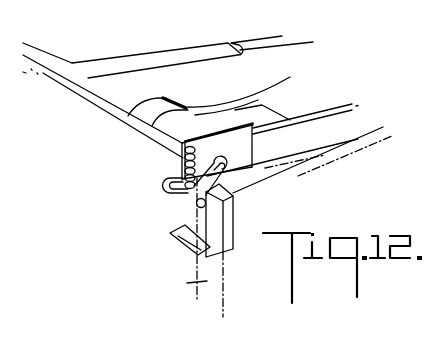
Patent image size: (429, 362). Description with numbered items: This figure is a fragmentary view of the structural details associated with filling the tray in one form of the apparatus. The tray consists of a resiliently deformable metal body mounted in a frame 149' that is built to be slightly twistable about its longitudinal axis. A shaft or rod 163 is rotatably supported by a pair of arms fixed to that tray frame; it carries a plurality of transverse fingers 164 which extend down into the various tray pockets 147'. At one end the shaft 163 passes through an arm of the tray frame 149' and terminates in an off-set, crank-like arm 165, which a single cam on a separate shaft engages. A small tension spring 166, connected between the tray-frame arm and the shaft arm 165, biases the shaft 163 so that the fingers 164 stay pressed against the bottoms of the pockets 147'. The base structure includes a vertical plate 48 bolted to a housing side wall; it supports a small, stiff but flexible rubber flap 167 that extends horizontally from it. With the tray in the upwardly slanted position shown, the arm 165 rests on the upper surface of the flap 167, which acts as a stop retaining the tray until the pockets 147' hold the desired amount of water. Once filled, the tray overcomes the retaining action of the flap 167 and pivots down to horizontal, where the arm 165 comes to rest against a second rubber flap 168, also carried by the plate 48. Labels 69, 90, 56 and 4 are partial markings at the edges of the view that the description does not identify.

The tray pockets 147' is at (192, 49).
The frame 149' is at (299, 137).
The shaft or rod 163 is at (103, 106).
The transverse fingers 164 is at (183, 101).
The crank-like arm 165 is at (175, 197).
The tension spring 166 is at (181, 157).
The rubber flap 167 is at (205, 217).
The second rubber flap 168 is at (178, 240).
The vertical plate 48 is at (184, 284).
The partial numeral 69 is at (225, 6).
The partial numeral 90 is at (312, 9).
The partial numeral 56 is at (385, 9).
The partial numeral 4 is at (425, 135).